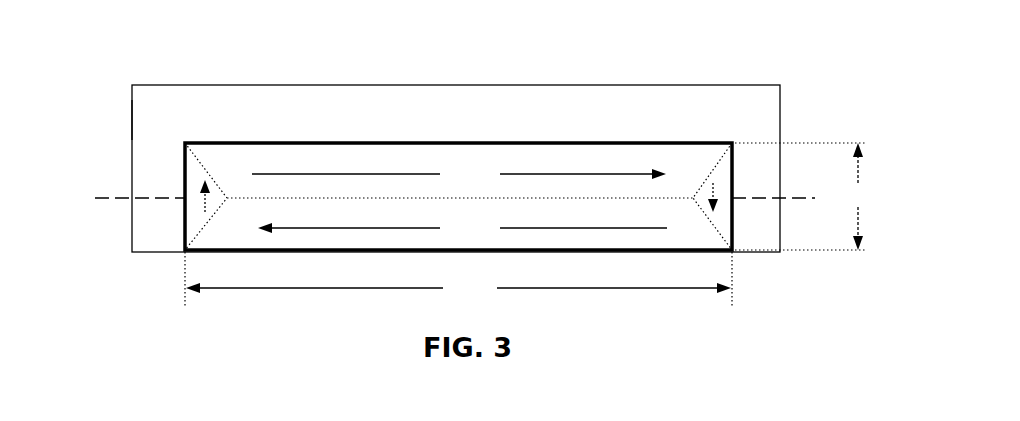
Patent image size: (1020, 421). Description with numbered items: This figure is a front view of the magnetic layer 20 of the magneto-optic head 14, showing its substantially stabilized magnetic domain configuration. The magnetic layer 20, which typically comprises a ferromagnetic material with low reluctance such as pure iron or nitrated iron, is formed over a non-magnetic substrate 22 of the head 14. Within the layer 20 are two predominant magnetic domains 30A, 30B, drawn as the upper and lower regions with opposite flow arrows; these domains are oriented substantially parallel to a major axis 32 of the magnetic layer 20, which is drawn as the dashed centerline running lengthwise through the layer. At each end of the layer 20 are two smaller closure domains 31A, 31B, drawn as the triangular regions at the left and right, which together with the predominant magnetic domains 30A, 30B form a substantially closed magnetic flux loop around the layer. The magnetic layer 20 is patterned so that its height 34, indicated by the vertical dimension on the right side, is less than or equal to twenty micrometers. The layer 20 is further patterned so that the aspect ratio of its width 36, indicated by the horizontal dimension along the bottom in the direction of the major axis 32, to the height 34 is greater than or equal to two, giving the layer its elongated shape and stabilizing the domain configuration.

The magneto-optic head 14 is at (97, 75).
The magnetic layer 20 is at (322, 162).
The non-magnetic substrate 22 is at (148, 143).
The magnetic domain 30A is at (489, 185).
The magnetic domain 30B is at (489, 236).
The closure domain 31A is at (197, 223).
The closure domain 31B is at (720, 223).
The major axis 32 is at (118, 198).
The height 34 is at (803, 196).
The width 36 is at (458, 280).